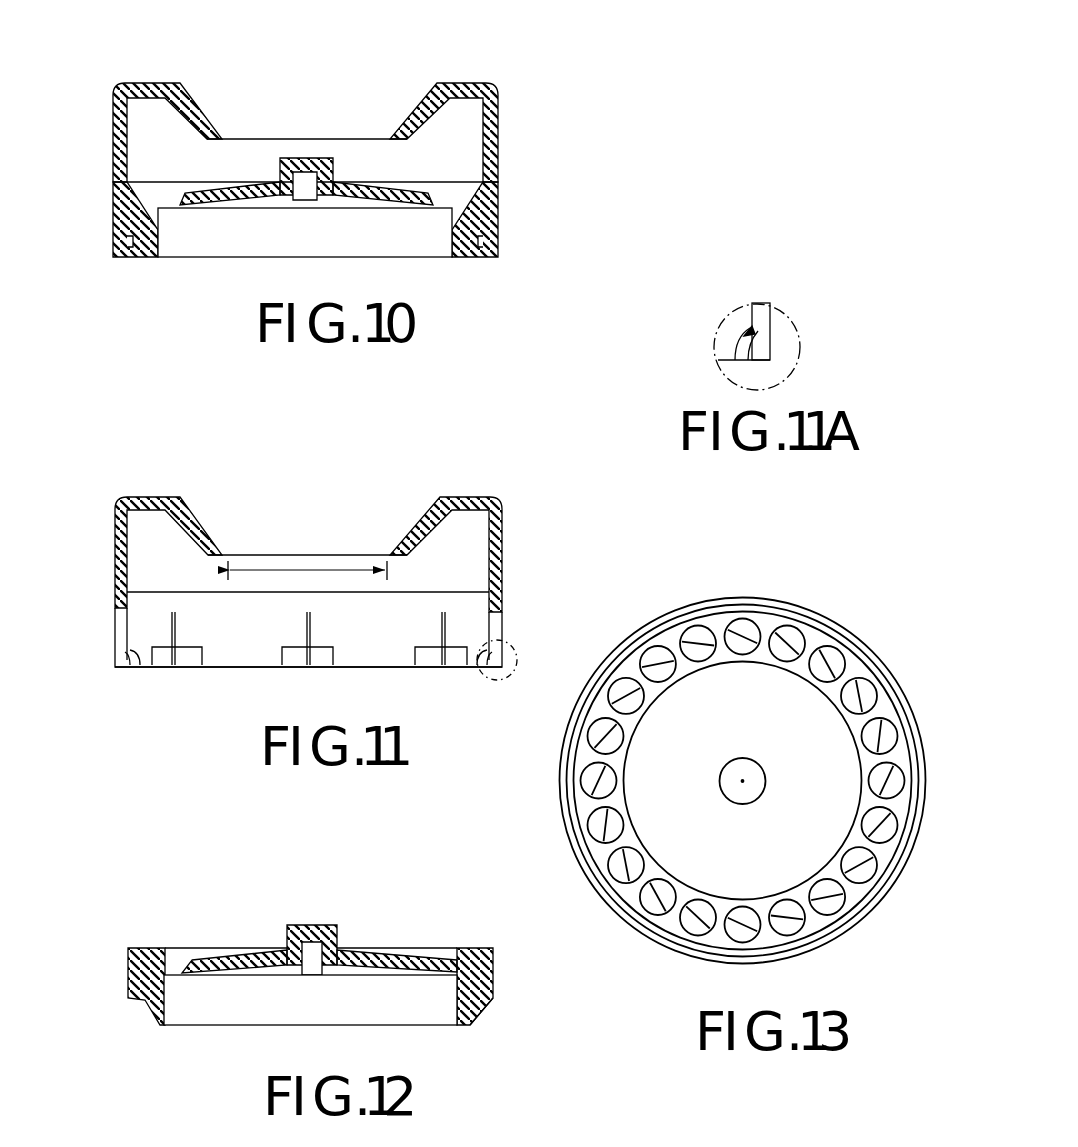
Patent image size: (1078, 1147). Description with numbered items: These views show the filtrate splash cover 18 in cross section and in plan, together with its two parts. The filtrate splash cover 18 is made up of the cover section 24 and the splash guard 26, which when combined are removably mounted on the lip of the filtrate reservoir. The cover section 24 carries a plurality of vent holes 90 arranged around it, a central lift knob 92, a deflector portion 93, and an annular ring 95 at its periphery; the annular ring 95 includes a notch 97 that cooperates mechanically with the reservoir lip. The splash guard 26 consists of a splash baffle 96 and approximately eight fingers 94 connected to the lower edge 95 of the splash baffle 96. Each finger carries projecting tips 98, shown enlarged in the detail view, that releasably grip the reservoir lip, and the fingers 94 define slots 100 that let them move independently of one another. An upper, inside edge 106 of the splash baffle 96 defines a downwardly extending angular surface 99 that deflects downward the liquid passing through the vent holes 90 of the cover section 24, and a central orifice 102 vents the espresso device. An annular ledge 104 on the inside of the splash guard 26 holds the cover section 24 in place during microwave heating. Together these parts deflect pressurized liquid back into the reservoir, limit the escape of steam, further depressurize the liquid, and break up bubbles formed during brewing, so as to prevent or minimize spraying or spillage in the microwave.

In FIG. 10, the filtrate splash cover 18 is at (352, 128).
In FIG. 10, the cover section 24 is at (240, 180).
In FIG. 13, the cover section 24 is at (746, 755).
In FIG. 12, the cover section 24 is at (313, 942).
In FIG. 10, the splash guard 26 is at (352, 166).
In FIG. 11, the splash guard 26 is at (348, 578).
In FIG. 10, the angular surface 99 is at (436, 128).
In FIG. 11, the splash baffle 96 is at (425, 510).
In FIG. 11A, the splash baffle 96 is at (778, 310).
In FIG. 11, the upper, inside edge 106 is at (250, 550).
In FIG. 11, the central orifice 102 is at (333, 570).
In FIG. 11, the annular ledge 104 is at (185, 583).
In FIG. 11, the projecting tips 98 is at (342, 650).
In FIG. 11A, the projecting tips 98 is at (754, 323).
In FIG. 11, the annular ring 95 is at (422, 636).
In FIG. 13, the annular ring 95 is at (852, 922).
In FIG. 12, the annular ring 95 is at (500, 972).
In FIG. 11, the slots 100 is at (300, 623).
In FIG. 11, the fingers 94 is at (357, 667).
In FIG. 13, the vent holes 90 is at (879, 706).
In FIG. 12, the vent holes 90 is at (158, 960).
In FIG. 13, the lift knob 92 is at (753, 795).
In FIG. 12, the lift knob 92 is at (341, 919).
In FIG. 13, the deflector portion 93 is at (824, 805).
In FIG. 12, the deflector portion 93 is at (405, 944).
In FIG. 12, the notch 97 is at (485, 1007).